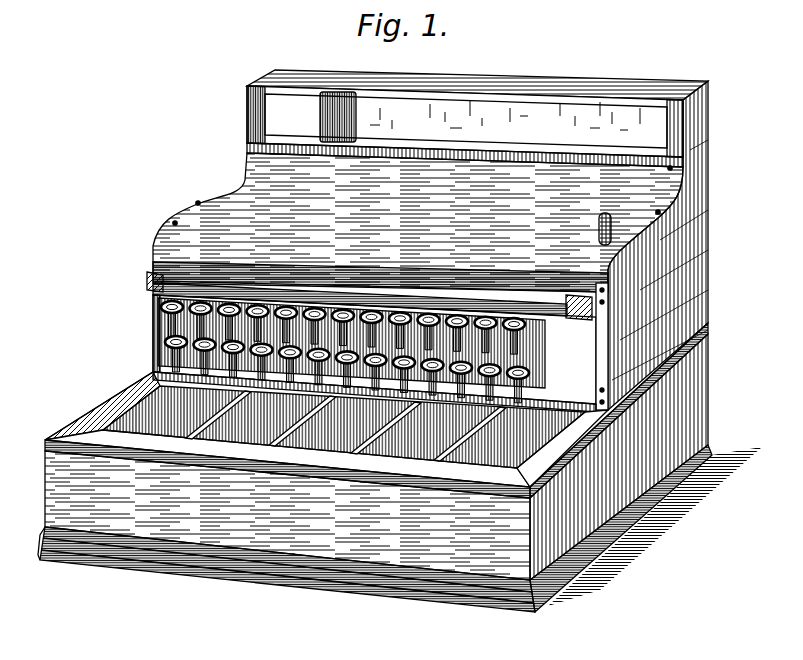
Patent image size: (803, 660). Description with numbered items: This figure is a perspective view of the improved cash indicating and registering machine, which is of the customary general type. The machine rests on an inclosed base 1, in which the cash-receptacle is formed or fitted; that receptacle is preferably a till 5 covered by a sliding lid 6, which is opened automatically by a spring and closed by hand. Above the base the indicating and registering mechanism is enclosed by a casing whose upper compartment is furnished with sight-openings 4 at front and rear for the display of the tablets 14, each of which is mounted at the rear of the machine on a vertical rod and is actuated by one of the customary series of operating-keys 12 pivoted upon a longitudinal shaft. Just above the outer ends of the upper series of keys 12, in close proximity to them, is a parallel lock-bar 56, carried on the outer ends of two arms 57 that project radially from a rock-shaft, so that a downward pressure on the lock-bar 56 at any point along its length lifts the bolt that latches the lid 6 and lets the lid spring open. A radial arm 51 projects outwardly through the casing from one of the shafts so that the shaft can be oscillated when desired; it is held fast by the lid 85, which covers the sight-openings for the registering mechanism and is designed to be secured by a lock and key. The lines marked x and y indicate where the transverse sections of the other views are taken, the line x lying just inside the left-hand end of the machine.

The inclosed base 1 is at (400, 467).
The sight-openings 4 is at (477, 113).
The till 5 is at (344, 427).
The sliding lid 6 is at (346, 426).
The operating-keys 12 is at (160, 309).
The tablets 14 is at (328, 118).
The radial arm 51 is at (611, 226).
The lock-bar 56 is at (533, 309).
The arms 57 is at (150, 280).
The lid 85 is at (418, 222).
The section line x is at (312, 61).
The section line y is at (697, 76).